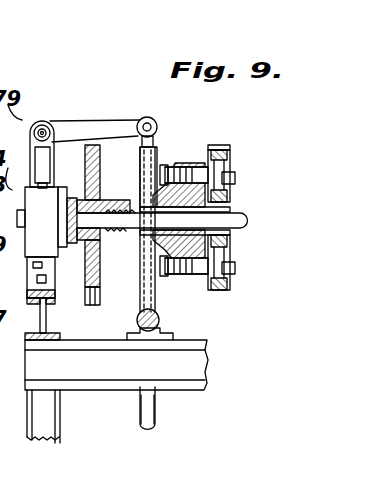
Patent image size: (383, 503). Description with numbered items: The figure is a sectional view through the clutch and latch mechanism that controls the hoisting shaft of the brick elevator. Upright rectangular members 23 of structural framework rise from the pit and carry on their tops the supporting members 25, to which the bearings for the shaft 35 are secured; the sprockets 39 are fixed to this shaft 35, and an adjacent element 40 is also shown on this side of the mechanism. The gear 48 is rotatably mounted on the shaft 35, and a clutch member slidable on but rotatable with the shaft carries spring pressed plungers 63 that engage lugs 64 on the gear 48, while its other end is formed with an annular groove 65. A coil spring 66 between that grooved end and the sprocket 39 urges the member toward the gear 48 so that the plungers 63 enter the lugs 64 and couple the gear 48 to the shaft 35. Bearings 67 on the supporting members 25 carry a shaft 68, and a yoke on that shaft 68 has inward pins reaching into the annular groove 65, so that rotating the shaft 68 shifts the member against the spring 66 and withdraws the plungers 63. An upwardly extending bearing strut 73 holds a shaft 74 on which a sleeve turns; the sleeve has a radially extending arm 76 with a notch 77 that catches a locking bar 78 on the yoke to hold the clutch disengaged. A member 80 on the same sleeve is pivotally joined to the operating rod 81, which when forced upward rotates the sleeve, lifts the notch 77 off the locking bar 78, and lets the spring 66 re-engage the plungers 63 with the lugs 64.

The rectangular members 23 is at (40, 432).
The supporting members 25 is at (192, 360).
The shaft 35 is at (246, 219).
The sprockets 39 is at (70, 290).
The block 40 is at (110, 306).
The gear 48 is at (230, 148).
The spring pressed plungers 63 is at (198, 163).
The lugs 64 is at (230, 190).
The annular groove 65 is at (98, 252).
The coil spring 66 is at (120, 192).
The bearings 67 is at (153, 170).
The shaft 68 is at (160, 318).
The bearing strut 73 is at (34, 162).
The shaft 74 is at (44, 130).
The radially extending arm 76 is at (95, 124).
The notch 77 is at (140, 125).
The locking bar 78 is at (168, 162).
The member 80 is at (150, 136).
The operating rod 81 is at (156, 422).